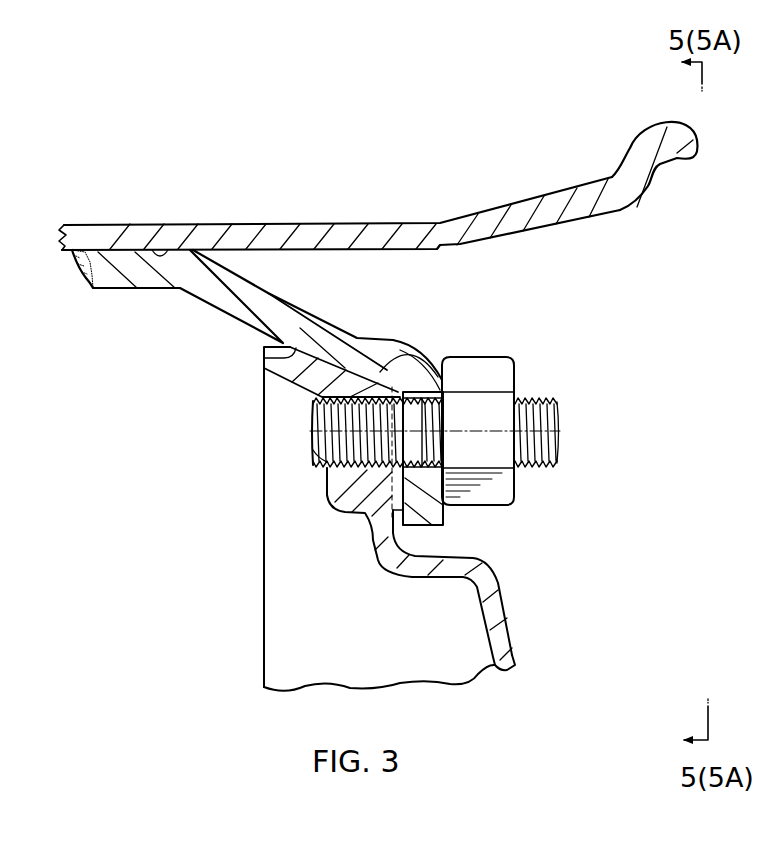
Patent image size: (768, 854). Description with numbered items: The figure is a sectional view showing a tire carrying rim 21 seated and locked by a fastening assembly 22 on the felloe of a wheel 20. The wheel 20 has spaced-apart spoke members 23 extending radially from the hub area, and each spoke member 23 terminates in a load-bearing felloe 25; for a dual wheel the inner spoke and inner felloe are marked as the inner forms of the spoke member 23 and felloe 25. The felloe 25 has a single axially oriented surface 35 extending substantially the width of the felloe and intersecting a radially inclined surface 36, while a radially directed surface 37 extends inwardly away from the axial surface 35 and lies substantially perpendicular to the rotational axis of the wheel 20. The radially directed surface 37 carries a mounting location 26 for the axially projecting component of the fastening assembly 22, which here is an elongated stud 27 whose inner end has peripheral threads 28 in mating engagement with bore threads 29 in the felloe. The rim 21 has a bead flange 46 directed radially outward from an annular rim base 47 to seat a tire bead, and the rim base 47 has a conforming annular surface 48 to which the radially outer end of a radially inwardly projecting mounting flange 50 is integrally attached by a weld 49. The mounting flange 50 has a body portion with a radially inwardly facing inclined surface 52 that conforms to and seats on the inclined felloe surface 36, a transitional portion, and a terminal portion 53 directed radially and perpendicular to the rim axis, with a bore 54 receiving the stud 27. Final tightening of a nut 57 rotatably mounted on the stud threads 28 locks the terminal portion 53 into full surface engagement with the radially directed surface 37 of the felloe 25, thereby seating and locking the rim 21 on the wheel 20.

The wheel 20 is at (258, 632).
The tire carrying rim 21 is at (322, 185).
The fastening assembly 22 is at (406, 437).
The spoke member 23 is at (333, 680).
The felloe 25 is at (258, 388).
The mounting location 26 is at (305, 417).
The elongated stud 27 is at (313, 438).
The peripheral threads 28 is at (320, 450).
The bore threads 29 is at (322, 468).
The axially oriented surface 35 is at (400, 356).
The radially inclined surface 36 is at (308, 350).
The radially directed surface 37 is at (412, 510).
The bead flange 46 is at (650, 138).
The annular rim base 47 is at (90, 225).
The conforming annular surface 48 is at (173, 250).
The weld 49 is at (84, 263).
The mounting flange 50 is at (312, 289).
The radially inclined flange surface 52 is at (280, 357).
The terminal portion 53 is at (441, 508).
The bore 54 is at (444, 413).
The nut 57 is at (508, 493).